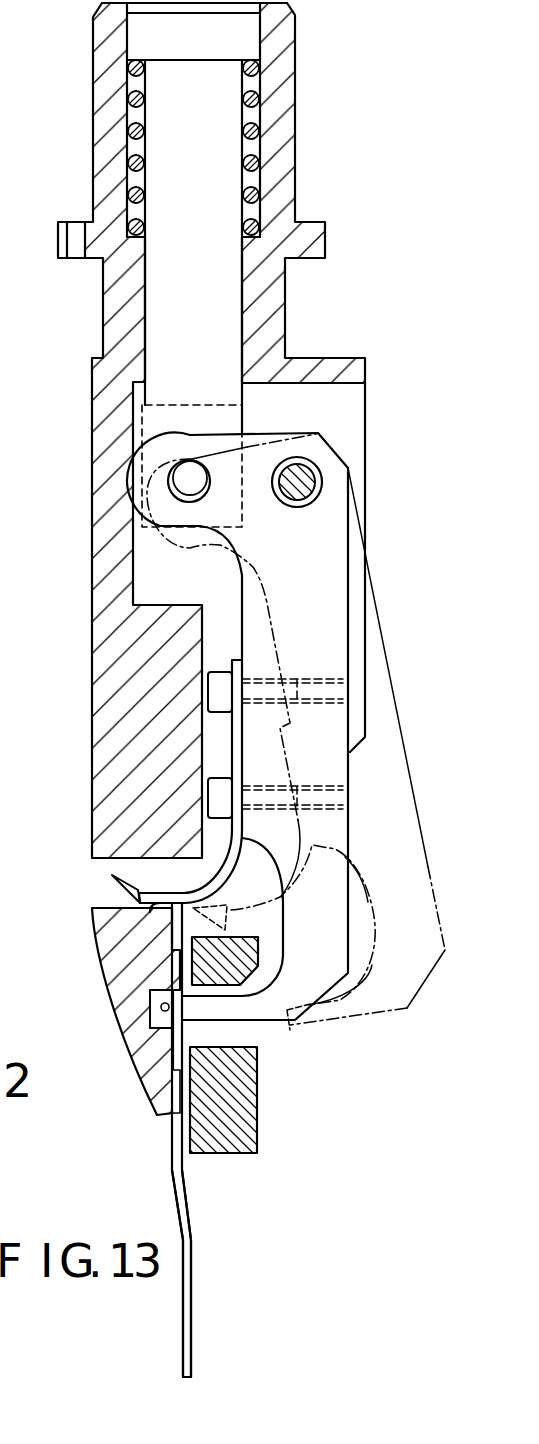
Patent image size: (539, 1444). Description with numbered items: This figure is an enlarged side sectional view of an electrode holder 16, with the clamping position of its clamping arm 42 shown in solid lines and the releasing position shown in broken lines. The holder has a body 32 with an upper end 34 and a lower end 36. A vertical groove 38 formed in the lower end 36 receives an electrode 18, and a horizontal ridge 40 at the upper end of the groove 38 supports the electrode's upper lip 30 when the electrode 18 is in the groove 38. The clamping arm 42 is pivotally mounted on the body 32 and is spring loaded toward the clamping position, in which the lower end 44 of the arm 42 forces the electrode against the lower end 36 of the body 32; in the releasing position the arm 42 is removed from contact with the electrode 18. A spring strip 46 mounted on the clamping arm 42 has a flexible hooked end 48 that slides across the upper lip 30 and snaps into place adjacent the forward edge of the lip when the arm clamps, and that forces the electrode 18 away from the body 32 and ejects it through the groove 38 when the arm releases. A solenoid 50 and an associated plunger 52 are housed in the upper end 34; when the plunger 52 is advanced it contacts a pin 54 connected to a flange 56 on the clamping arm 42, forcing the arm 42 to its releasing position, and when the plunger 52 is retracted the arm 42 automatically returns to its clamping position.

The electrode holder 16 is at (306, 46).
The electrode 18 is at (190, 1255).
The upper lip 30 is at (143, 913).
The body 32 is at (108, 558).
The upper end 34 is at (102, 85).
The lower end 36 is at (122, 1005).
The vertical groove 38 is at (183, 1140).
The horizontal ridge 40 is at (103, 907).
The clamping arm 42 is at (348, 558).
The lower end 44 is at (267, 1003).
The spring strip 46 is at (233, 735).
The hooked end 48 is at (138, 889).
The solenoid 50 is at (257, 130).
The plunger 52 is at (220, 310).
The pin 54 is at (186, 467).
The flange 56 is at (172, 433).